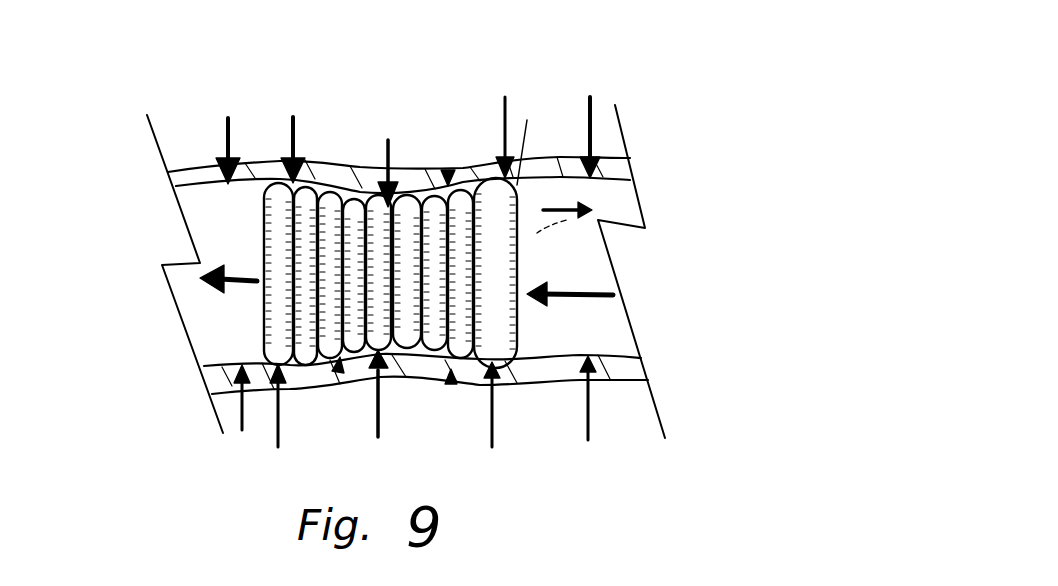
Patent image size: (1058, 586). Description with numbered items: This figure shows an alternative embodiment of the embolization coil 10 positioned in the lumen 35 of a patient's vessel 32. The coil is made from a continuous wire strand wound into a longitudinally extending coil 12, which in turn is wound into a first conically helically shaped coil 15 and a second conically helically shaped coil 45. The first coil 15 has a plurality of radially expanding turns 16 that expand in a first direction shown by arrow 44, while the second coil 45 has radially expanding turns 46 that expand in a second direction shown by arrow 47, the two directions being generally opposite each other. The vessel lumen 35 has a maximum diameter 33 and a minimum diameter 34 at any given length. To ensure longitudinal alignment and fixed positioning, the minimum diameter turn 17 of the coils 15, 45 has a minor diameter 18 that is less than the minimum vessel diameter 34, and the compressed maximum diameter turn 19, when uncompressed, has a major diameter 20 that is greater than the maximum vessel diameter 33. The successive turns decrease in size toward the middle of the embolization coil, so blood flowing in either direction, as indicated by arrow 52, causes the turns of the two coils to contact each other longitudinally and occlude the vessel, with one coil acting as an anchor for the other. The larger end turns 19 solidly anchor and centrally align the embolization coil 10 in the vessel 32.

The embolization coil 10 is at (398, 98).
The longitudinally extending coil 12 is at (430, 358).
The first conically helically shaped coil 15 is at (331, 160).
The radially expanding turns 16 is at (339, 367).
The minimum diameter turn 17 is at (401, 170).
The minor diameter 18 is at (380, 413).
The compressed maximum diameter turn 19 is at (265, 185).
The major diameter 20 is at (293, 145).
The vessel 32 is at (542, 388).
The maximum diameter 33 is at (222, 133).
The minimum diameter 34 is at (593, 113).
The vessel lumen 35 is at (607, 330).
The first direction arrow 44 is at (253, 272).
The second conically helically shaped coil 45 is at (448, 172).
The radially expanding turns 46 is at (451, 380).
The second direction arrow 47 is at (558, 205).
The blood flow arrow 52 is at (600, 287).